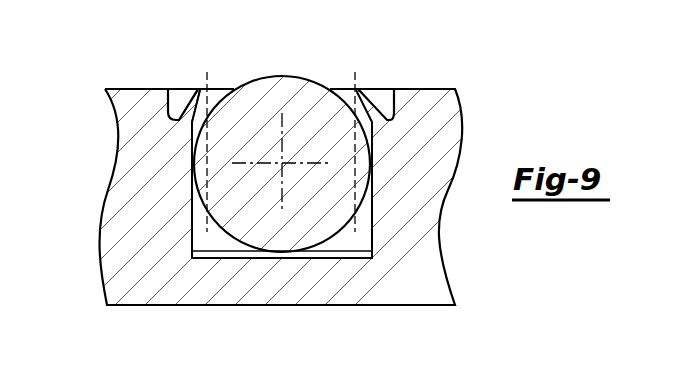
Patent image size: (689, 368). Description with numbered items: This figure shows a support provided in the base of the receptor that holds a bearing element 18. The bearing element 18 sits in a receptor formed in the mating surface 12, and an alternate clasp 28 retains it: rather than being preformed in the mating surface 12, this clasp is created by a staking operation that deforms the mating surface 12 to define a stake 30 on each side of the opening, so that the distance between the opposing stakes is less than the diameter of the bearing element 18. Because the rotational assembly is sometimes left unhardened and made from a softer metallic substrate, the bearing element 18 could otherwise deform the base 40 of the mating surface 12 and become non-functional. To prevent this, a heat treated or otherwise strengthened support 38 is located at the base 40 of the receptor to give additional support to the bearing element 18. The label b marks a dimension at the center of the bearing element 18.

The mating surface 12 is at (427, 88).
The bearing element 18 is at (283, 162).
The alternate clasp 28 is at (185, 72).
The stake 30 is at (198, 88).
The support 38 is at (248, 256).
The base 40 is at (298, 258).
The dimension b is at (286, 161).